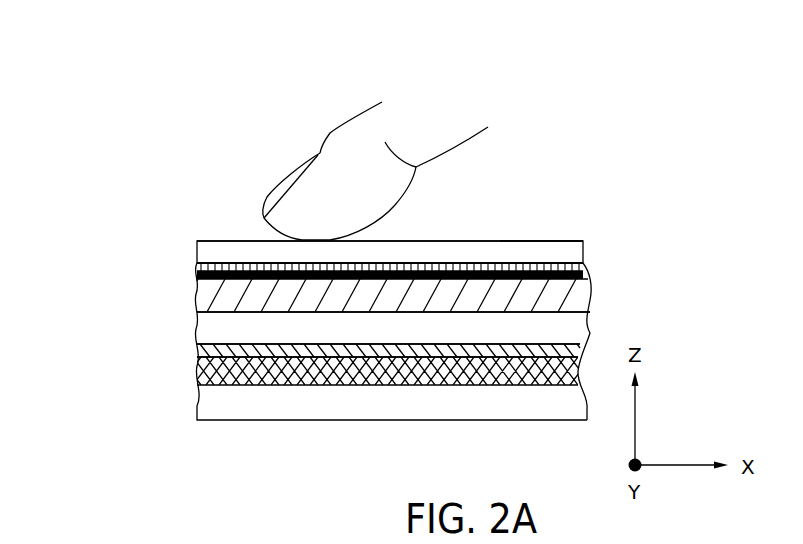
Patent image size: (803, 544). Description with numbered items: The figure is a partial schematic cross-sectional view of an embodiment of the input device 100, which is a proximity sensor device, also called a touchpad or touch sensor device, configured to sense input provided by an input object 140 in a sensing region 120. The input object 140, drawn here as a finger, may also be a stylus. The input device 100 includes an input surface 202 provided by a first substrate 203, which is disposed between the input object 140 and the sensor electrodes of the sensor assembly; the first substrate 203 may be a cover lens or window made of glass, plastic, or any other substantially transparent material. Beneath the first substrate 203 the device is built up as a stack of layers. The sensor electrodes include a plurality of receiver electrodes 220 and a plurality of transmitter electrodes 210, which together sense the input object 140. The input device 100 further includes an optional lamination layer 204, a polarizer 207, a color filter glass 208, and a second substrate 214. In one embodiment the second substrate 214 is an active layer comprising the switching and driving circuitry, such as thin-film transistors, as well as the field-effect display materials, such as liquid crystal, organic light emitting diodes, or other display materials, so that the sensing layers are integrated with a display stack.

The input device 100 is at (559, 150).
The sensing region 120 is at (228, 136).
The input object 140 is at (329, 110).
The input surface 202 is at (430, 241).
The first substrate 203 is at (527, 250).
The lamination layer 204 is at (198, 266).
The polarizer 207 is at (584, 272).
The color filter glass 208 is at (213, 329).
The transmitter electrodes 210 is at (257, 376).
The second substrate 214 is at (590, 323).
The receiver electrodes 220 is at (193, 302).